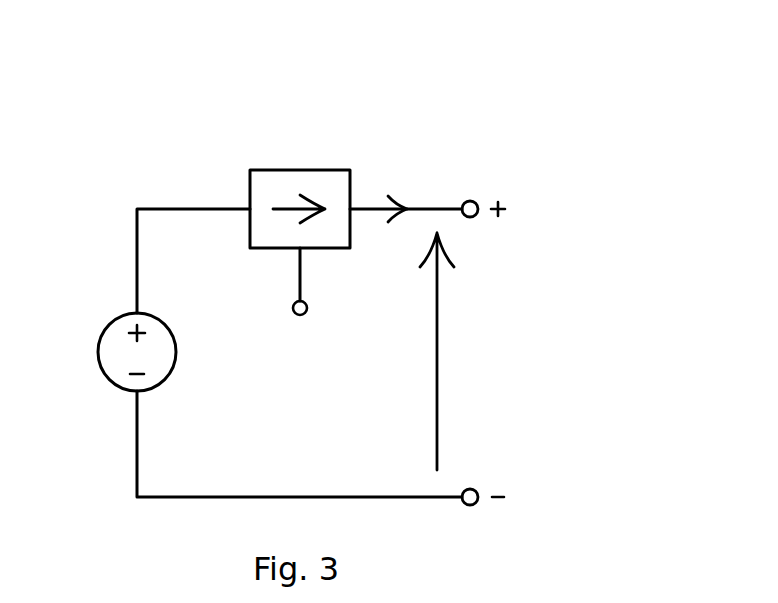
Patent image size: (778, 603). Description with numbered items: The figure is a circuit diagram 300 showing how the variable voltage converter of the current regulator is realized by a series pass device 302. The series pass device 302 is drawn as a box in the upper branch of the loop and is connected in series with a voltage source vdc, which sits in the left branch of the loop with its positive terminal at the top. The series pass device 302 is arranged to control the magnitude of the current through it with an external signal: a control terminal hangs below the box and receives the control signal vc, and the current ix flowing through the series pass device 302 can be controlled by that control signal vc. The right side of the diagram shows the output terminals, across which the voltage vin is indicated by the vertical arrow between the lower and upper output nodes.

The series pass regulator circuit 300 is at (614, 80).
The series pass device 302 is at (355, 170).
The voltage source vdc is at (105, 352).
The control signal vc is at (299, 313).
The input voltage vin is at (458, 351).
The current through the series pass device ix is at (397, 181).